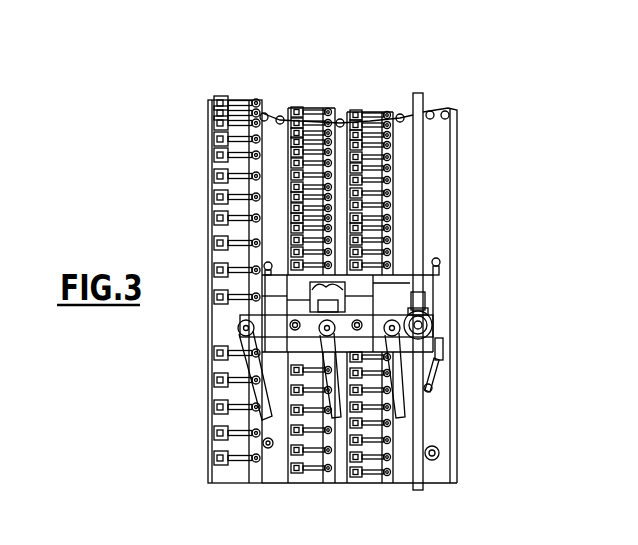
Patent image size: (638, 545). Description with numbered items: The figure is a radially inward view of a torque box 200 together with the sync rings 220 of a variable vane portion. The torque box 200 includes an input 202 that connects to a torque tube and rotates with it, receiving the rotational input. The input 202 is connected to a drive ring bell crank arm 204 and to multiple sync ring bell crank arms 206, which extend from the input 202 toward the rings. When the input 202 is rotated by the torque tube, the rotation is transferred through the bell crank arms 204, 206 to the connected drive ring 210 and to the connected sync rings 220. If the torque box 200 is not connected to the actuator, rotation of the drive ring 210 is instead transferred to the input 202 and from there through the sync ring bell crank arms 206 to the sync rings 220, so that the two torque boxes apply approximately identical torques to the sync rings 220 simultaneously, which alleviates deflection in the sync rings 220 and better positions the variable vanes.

The drive ring 210 is at (262, 90).
The torque box 200 is at (395, 287).
The sync rings 220 is at (370, 290).
The input 202 is at (430, 312).
The drive ring bell crank arm 204 is at (437, 368).
The sync ring bell crank arms 206 is at (250, 374).